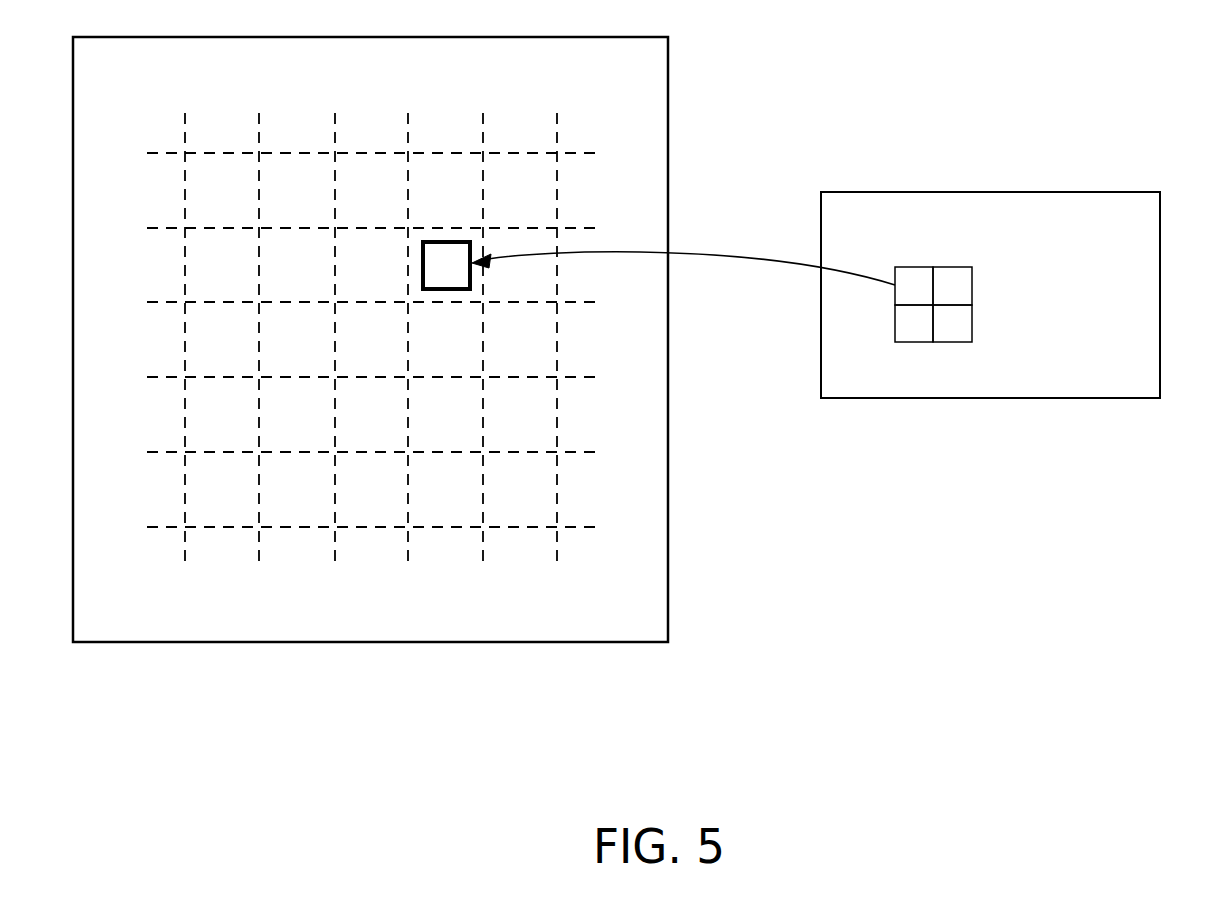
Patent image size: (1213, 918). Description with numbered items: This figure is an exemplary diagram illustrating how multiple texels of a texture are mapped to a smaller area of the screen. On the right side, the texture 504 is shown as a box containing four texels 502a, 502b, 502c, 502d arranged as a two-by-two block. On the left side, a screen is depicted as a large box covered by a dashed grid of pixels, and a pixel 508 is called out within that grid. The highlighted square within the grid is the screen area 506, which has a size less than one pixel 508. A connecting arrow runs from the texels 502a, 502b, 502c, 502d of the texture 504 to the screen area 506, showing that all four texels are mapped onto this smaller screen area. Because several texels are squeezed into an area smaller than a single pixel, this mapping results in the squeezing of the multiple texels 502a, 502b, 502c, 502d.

The texel 502a is at (963, 267).
The texel 502b is at (972, 322).
The texel 502c is at (913, 342).
The texel 502d is at (901, 267).
The texture 504 is at (816, 339).
The screen area 506 is at (467, 239).
The pixel 508 is at (480, 292).